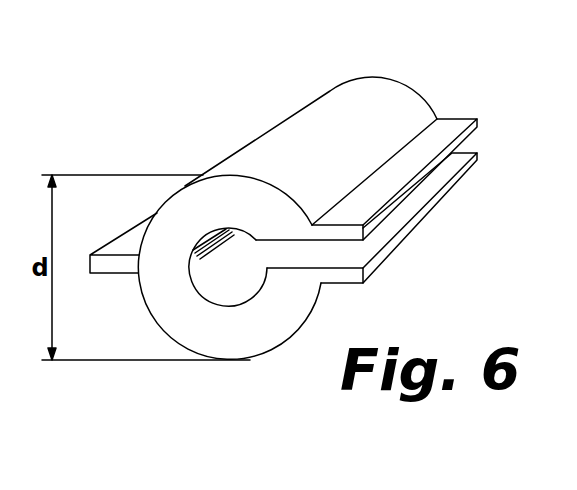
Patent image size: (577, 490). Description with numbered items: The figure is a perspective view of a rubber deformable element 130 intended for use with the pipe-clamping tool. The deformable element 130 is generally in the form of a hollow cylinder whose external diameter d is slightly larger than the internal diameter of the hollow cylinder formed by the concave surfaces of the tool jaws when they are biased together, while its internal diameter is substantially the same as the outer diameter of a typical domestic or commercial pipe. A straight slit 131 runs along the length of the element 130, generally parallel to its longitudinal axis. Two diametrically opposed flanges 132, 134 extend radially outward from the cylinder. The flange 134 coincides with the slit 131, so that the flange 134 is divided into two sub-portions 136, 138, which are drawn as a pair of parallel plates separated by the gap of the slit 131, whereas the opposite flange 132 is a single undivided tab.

The rubber deformable element 130 is at (190, 127).
The straight slit 131 is at (272, 250).
The flange 132 is at (120, 265).
The flange 134 is at (405, 203).
The sub-portion 136 is at (443, 157).
The sub-portion 138 is at (425, 215).